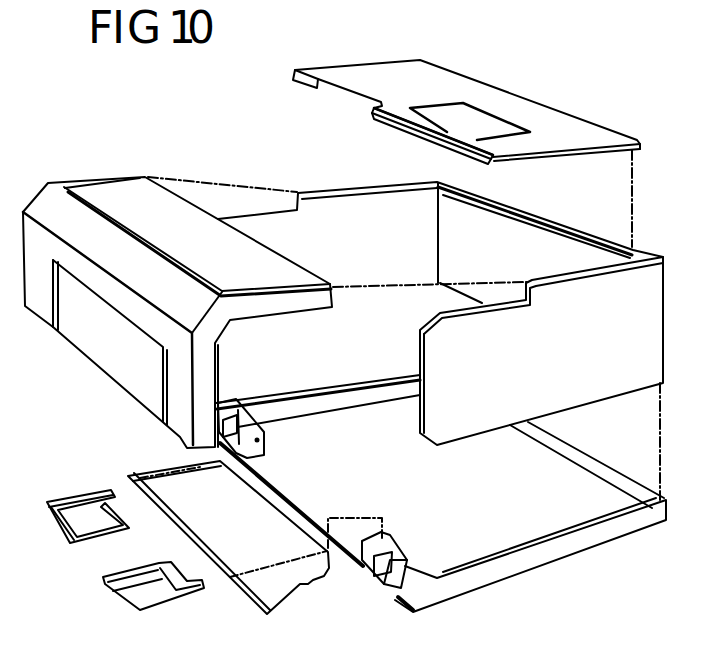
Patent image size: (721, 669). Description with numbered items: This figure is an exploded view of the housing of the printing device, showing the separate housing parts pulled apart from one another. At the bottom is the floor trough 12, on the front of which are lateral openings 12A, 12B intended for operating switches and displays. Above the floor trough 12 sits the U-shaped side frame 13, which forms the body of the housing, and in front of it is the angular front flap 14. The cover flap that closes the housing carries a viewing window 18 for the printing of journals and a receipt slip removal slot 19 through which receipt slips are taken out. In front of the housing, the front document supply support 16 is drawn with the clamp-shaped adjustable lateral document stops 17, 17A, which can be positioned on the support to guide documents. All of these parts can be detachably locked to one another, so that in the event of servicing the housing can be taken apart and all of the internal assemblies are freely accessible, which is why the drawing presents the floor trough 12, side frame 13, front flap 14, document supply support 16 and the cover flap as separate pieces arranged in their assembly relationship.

The floor trough 12 is at (453, 587).
The lateral opening 12A is at (182, 437).
The lateral opening 12B is at (384, 592).
The U-shaped side frame 13 is at (320, 213).
The angular front flap 14 is at (88, 190).
The front document supply support 16 is at (266, 603).
The lateral document stop 17 is at (164, 598).
The lateral document stop 17A is at (73, 497).
The viewing window 18 is at (462, 120).
The receipt slip removal slot 19 is at (350, 94).